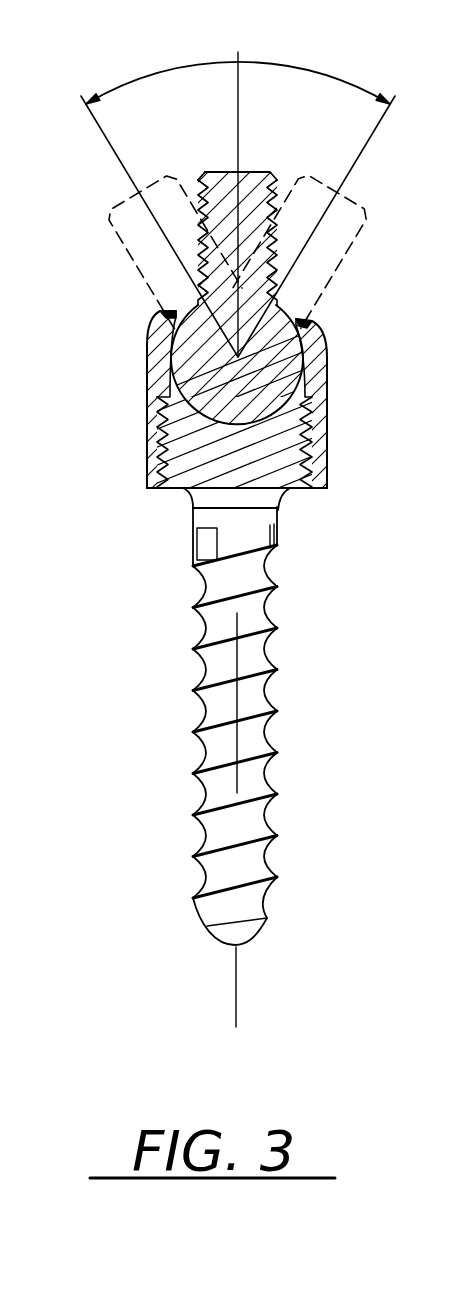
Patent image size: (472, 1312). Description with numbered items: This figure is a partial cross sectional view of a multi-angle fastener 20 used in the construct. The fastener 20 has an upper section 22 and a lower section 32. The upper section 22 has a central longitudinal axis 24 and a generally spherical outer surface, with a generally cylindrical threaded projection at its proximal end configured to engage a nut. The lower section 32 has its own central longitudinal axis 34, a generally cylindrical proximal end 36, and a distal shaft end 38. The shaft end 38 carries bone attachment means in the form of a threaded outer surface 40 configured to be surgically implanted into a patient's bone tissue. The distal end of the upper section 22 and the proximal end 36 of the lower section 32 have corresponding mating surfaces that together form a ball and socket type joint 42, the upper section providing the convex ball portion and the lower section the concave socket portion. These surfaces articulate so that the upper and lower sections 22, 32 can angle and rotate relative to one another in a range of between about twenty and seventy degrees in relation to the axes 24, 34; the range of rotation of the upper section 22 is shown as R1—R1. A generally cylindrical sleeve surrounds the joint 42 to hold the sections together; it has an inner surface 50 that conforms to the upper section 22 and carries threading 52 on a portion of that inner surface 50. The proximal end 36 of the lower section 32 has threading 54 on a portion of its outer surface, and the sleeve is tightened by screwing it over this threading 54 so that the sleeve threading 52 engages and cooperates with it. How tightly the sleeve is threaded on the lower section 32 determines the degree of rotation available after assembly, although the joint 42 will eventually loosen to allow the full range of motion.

The multi-angle fastener 20 is at (93, 497).
The upper section 22 is at (251, 408).
The central longitudinal axis 24 is at (242, 88).
The lower section 32 is at (231, 625).
The central longitudinal axis 34 is at (237, 992).
The proximal end 36 is at (288, 493).
The distal shaft end 38 is at (231, 726).
The threaded outer surface 40 is at (275, 672).
The joint 42 is at (130, 428).
The inner surface 50 is at (158, 320).
The threading 52 is at (303, 442).
The threading 54 is at (147, 490).
The range of rotation R1 is at (251, 202).